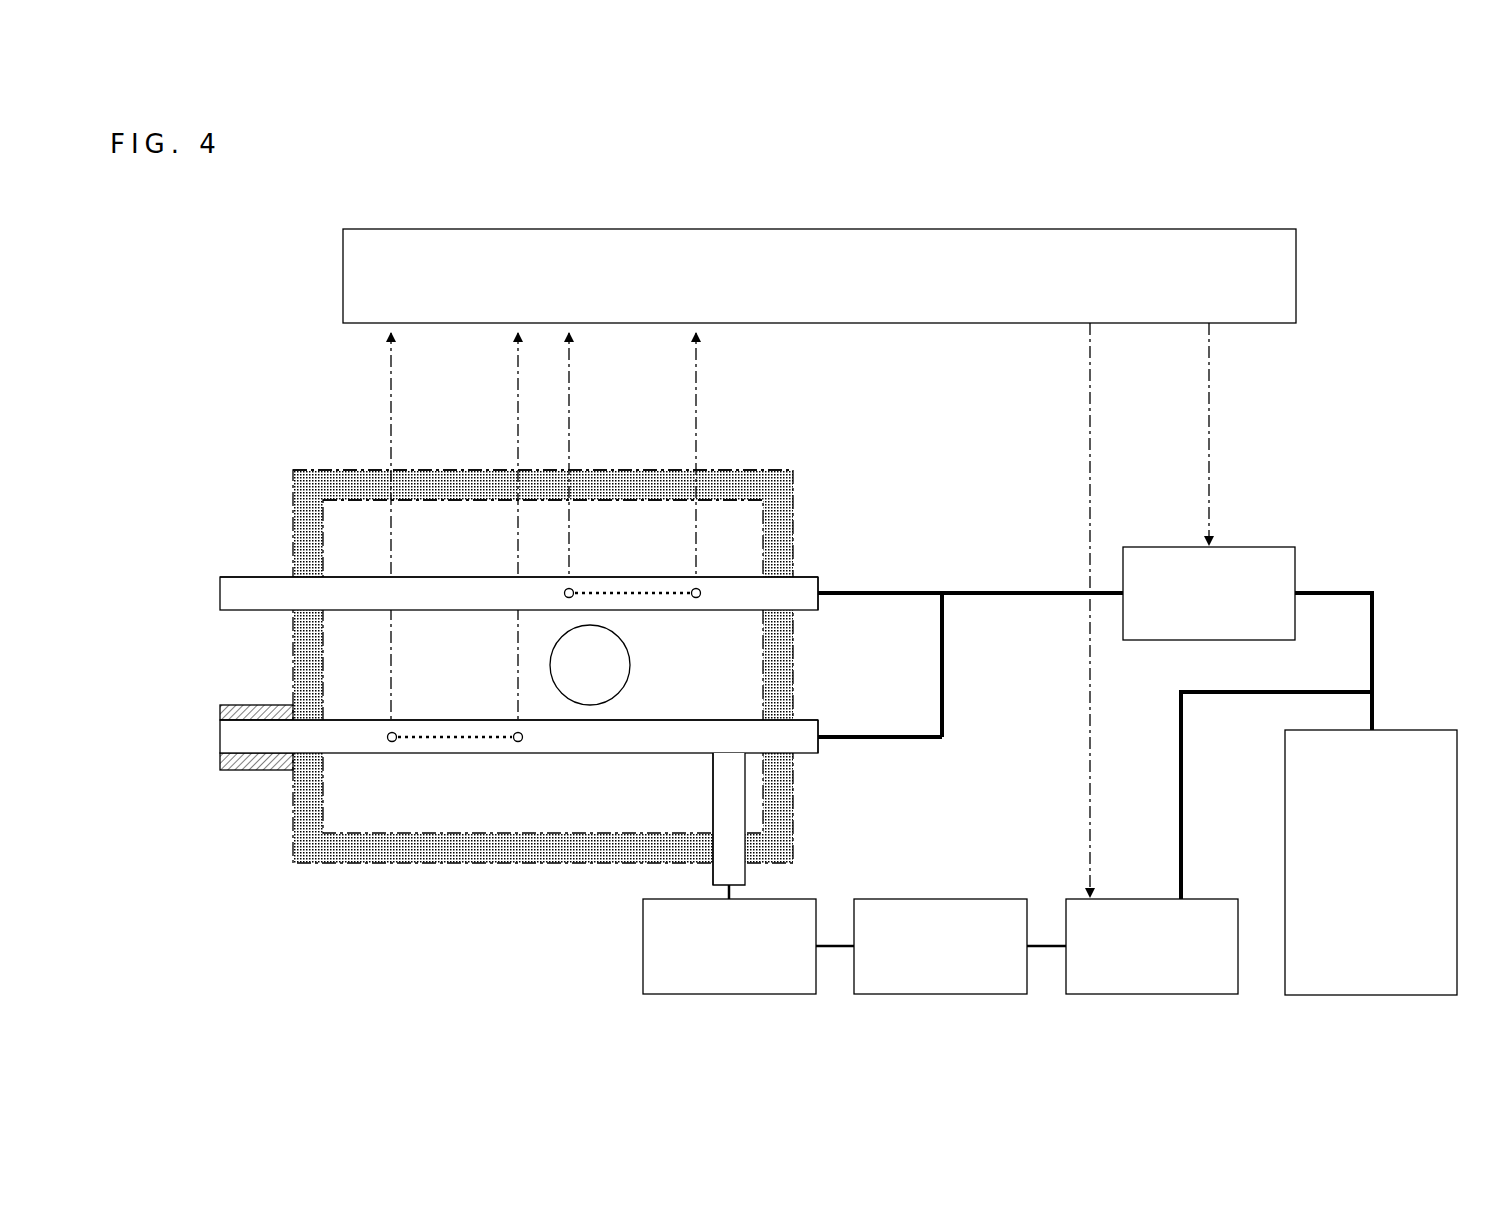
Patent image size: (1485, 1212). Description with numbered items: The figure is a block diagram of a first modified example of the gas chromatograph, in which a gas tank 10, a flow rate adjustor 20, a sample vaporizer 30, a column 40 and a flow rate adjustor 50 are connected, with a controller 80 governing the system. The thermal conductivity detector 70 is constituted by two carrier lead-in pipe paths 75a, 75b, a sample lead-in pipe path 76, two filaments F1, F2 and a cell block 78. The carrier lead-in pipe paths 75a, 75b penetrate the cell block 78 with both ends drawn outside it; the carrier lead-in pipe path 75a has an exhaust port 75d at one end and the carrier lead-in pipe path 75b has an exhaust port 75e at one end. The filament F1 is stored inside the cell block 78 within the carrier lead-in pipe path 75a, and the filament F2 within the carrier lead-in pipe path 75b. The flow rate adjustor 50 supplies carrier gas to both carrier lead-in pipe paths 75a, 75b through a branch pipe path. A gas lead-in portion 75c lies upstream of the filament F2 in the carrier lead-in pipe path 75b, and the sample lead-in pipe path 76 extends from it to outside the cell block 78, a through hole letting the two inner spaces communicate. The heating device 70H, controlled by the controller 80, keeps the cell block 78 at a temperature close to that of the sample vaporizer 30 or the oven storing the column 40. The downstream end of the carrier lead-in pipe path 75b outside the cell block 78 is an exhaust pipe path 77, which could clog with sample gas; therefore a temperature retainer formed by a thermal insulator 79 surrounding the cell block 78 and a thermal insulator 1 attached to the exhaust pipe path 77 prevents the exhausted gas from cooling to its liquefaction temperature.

The thermal insulator 1 is at (262, 765).
The gas tank 10 is at (1400, 730).
The flow rate adjustor 20 is at (1207, 898).
The sample vaporizer 30 is at (972, 898).
The column 40 is at (758, 898).
The flow rate adjustor 50 is at (1238, 546).
The thermal conductivity detector 70 is at (325, 440).
The heating device 70H is at (566, 681).
The carrier lead-in pipe path 75a is at (815, 577).
The carrier lead-in pipe path 75b is at (812, 755).
The gas lead-in portion 75c is at (735, 750).
The exhaust port 75d is at (218, 595).
The exhaust port 75e is at (220, 738).
The sample lead-in pipe path 76 is at (712, 818).
The exhaust pipe path 77 is at (265, 712).
The cell block 78 is at (728, 497).
The thermal insulator 79 is at (613, 487).
The controller 80 is at (1240, 228).
The filament F1 is at (587, 578).
The filament F2 is at (410, 715).